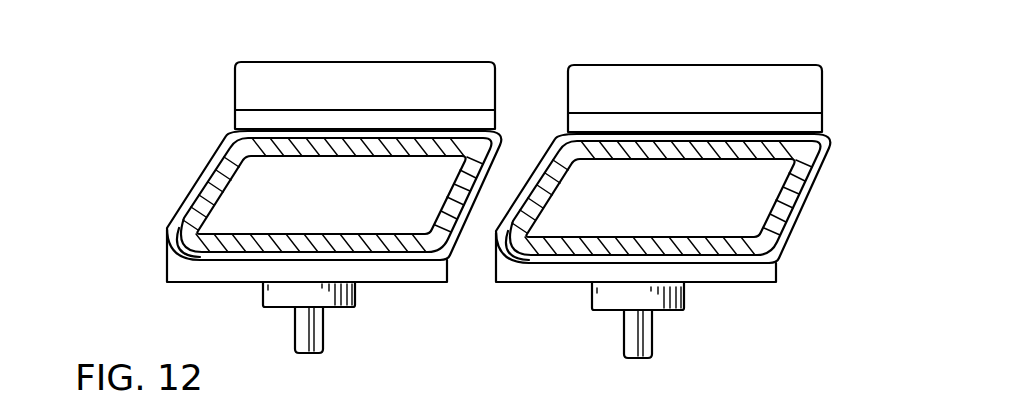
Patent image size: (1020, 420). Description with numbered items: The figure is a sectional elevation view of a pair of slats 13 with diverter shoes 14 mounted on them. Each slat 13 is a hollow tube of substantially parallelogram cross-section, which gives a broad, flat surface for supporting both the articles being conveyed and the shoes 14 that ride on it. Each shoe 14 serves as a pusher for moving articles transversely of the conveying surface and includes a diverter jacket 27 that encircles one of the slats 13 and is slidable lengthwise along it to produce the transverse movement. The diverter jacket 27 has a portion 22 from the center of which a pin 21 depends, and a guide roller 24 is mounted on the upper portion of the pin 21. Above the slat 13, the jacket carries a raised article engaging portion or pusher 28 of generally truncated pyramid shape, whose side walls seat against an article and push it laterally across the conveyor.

The pusher 28 is at (495, 80).
The shoe 14 is at (207, 140).
The slat 13 is at (197, 185).
The diverter jacket 27 is at (173, 218).
The portion 22 is at (423, 282).
The guide roller 24 is at (263, 290).
The pin 21 is at (323, 327).